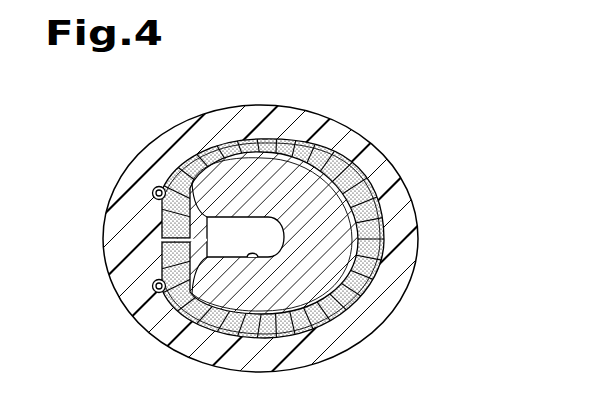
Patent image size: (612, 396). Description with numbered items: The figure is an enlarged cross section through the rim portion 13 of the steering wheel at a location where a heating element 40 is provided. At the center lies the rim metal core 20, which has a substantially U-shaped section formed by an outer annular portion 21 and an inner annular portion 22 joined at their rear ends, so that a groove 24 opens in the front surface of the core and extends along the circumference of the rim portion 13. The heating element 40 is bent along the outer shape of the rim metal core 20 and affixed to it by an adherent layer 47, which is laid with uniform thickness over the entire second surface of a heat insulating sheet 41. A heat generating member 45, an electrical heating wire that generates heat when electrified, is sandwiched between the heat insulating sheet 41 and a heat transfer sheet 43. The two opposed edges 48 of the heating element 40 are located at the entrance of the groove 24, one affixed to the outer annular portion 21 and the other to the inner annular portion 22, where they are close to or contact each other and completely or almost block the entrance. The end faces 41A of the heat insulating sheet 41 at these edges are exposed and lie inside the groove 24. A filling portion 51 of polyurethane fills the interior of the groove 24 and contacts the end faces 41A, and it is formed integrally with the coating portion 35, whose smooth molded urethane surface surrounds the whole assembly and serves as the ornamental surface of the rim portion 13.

The rim portion 13 is at (64, 141).
The rim metal core 20 is at (292, 232).
The outer annular portion 21 is at (202, 150).
The inner annular portion 22 is at (172, 324).
The groove 24 is at (286, 251).
The coating portion 35 is at (376, 154).
The heating element 40 is at (386, 240).
The heat insulating sheet 41 is at (386, 313).
The end face 41A is at (228, 208).
The heat transfer sheet 43 is at (383, 312).
The heat generating member 45 is at (152, 193).
The adherent layer 47 is at (382, 274).
The opposed edges 48 is at (190, 240).
The filling portion 51 is at (258, 262).